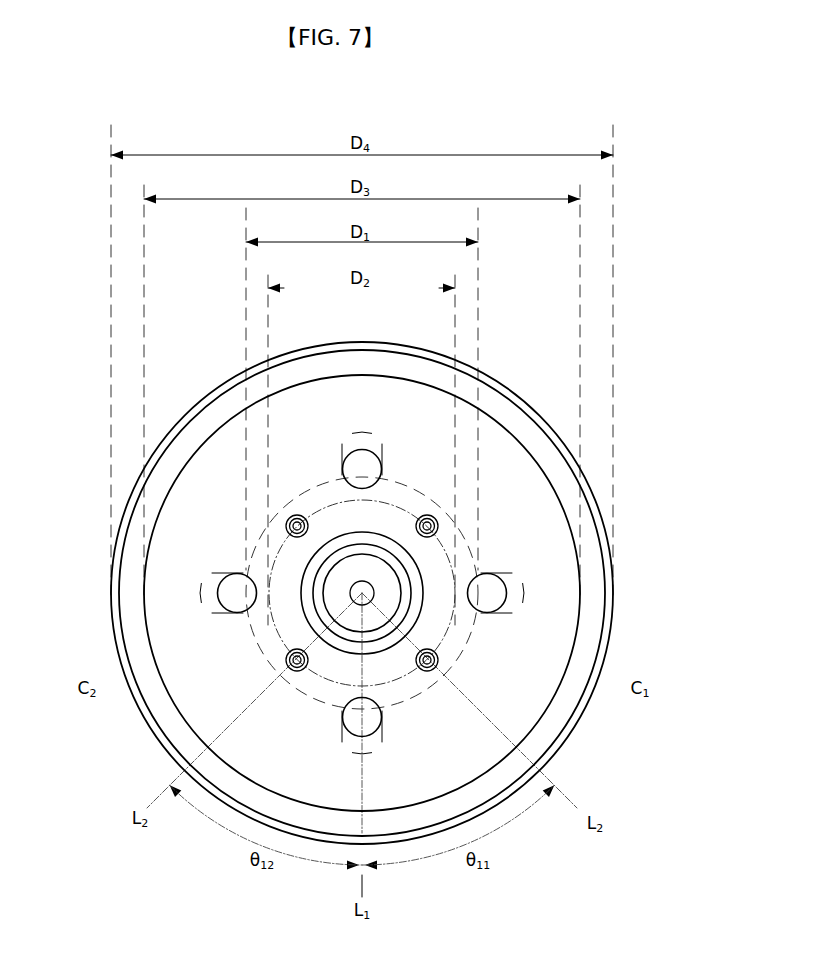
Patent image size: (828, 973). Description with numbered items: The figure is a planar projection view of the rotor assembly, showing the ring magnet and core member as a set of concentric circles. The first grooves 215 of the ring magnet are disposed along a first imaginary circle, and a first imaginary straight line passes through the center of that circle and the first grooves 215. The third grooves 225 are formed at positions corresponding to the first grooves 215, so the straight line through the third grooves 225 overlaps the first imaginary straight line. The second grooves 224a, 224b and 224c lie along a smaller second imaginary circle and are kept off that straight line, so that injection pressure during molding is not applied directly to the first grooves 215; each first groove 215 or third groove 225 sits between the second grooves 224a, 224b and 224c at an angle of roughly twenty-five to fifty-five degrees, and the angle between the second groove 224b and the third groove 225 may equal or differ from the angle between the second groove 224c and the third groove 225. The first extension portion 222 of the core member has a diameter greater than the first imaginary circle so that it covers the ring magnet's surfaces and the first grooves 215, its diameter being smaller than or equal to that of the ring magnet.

The first groove 215 is at (600, 647).
The first extension portion 222 is at (318, 593).
The second groove 224a is at (445, 523).
The second groove 224b is at (436, 656).
The second groove 224c is at (290, 660).
The third groove 225 is at (525, 589).